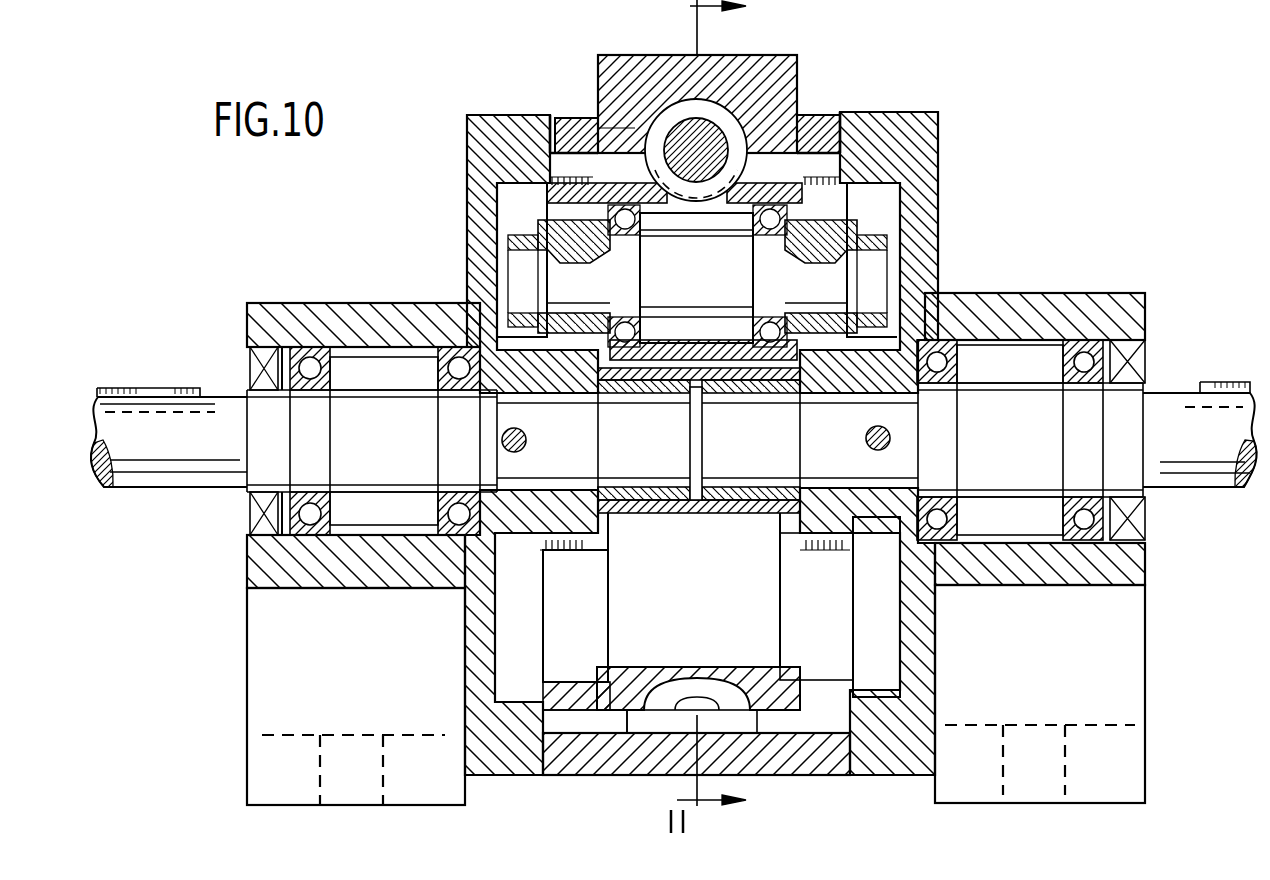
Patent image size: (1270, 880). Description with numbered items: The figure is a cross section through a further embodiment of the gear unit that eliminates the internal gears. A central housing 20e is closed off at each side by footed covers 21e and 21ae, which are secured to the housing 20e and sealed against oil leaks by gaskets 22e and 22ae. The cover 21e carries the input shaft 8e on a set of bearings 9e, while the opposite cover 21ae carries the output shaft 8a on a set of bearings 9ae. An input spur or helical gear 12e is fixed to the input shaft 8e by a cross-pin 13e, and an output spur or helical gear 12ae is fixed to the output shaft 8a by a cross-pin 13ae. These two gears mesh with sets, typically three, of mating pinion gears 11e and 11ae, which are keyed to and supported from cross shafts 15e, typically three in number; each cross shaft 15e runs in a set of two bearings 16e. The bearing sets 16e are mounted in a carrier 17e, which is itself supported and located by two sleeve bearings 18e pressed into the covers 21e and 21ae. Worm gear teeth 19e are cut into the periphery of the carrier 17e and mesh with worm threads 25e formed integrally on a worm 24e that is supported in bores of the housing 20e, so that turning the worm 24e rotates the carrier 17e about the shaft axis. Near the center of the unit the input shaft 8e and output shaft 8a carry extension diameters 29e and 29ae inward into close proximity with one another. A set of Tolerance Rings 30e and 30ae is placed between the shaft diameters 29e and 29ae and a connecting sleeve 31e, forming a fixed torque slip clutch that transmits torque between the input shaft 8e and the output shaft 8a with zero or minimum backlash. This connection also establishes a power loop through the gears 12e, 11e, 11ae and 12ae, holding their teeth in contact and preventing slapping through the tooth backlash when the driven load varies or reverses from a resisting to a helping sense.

The output shaft 8a is at (228, 423).
The input shaft 8e is at (1160, 415).
The bearings 9ae is at (330, 347).
The bearings 9e is at (963, 345).
The pinion gears 11ae is at (500, 220).
The pinion gears 11e is at (857, 224).
The output spur or helical gear 12ae is at (578, 547).
The input spur or helical gear 12e is at (815, 540).
The cross-pin 13ae is at (527, 440).
The cross-pin 13e is at (868, 440).
The cross shafts 15e is at (833, 277).
The bearings 16e is at (743, 312).
The carrier 17e is at (808, 114).
The sleeve bearings 18e is at (567, 150).
The worm gear teeth 19e is at (613, 133).
The housing 20e is at (793, 62).
The footed cover 21ae is at (468, 124).
The footed cover 21e is at (925, 112).
The gasket 22ae is at (541, 115).
The gasket 22e is at (842, 112).
The worm 24e is at (713, 135).
The worm threads 25e is at (580, 164).
The extension diameter 29ae is at (696, 517).
The extension diameter 29e is at (722, 517).
The Tolerance Ring 30ae is at (688, 515).
The Tolerance Ring 30e is at (757, 517).
The connecting sleeve 31e is at (713, 517).